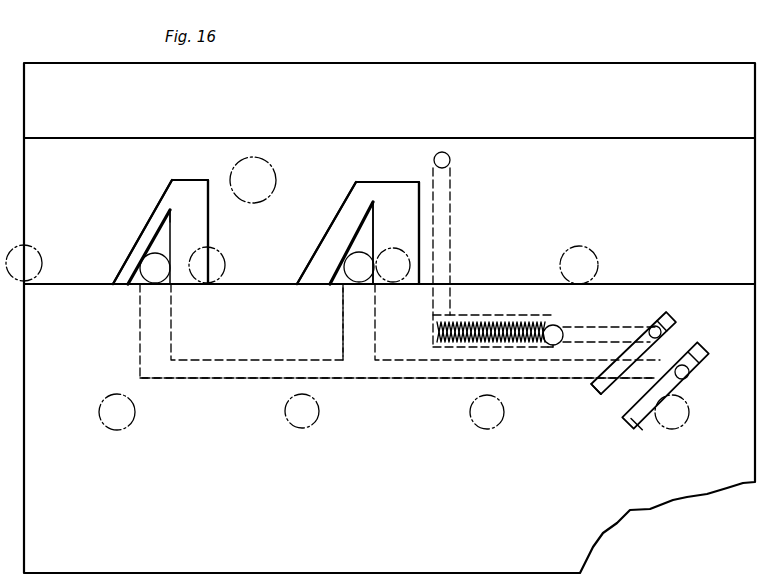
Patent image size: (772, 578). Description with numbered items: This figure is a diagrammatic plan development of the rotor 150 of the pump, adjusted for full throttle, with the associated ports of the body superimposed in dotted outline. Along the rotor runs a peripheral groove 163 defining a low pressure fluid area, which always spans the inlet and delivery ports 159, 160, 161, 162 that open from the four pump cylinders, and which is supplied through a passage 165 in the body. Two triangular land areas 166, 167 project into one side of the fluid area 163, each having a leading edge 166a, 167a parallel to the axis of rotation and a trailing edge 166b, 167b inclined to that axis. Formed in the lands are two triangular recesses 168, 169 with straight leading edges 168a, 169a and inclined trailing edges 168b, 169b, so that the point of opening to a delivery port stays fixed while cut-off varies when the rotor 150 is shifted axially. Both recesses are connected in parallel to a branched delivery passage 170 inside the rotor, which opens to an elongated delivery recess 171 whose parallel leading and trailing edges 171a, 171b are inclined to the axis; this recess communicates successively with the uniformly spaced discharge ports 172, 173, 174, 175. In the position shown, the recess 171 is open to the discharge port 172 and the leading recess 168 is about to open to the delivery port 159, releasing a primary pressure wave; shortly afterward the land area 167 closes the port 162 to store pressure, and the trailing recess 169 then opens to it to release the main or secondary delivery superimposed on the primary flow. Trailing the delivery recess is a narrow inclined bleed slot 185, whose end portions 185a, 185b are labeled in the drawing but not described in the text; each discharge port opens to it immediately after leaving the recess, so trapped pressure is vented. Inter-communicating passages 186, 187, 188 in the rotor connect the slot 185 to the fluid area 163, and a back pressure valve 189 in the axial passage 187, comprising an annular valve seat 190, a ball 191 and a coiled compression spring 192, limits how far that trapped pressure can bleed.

The rotor 150 is at (663, 77).
The peripheral groove 163 is at (675, 148).
The inlet and delivery port 159 is at (393, 284).
The inlet and delivery port 160 is at (593, 253).
The inlet and delivery port 161 is at (38, 252).
The inlet and delivery port 162 is at (222, 260).
The passage 165 is at (275, 172).
The land area 166 is at (392, 217).
The leading edge 166a is at (419, 206).
The trailing edge 166b is at (347, 198).
The land area 167 is at (180, 217).
The leading edge 167a is at (208, 213).
The trailing edge 167b is at (160, 229).
The recess 168 is at (473, 281).
The leading edge 168a is at (395, 243).
The trailing edge 168b is at (351, 243).
The recess 169 is at (372, 276).
The leading edge 169a is at (170, 216).
The trailing edge 169b is at (149, 247).
The branched delivery passage 170 is at (408, 380).
The delivery recess 171 is at (642, 402).
The leading edge 171a is at (636, 428).
The trailing edge 171b is at (624, 416).
The discharge port 172 is at (687, 428).
The discharge port 173 is at (105, 399).
The discharge port 174 is at (293, 425).
The discharge port 175 is at (475, 424).
The bleed slot 185 is at (632, 348).
The end of link 185a is at (680, 326).
The end of link 185b is at (594, 386).
The passage 186 is at (605, 327).
The passage 187 is at (470, 315).
The passage 188 is at (451, 244).
The back pressure valve 189 is at (546, 355).
The annular valve seat 190 is at (558, 325).
The ball 191 is at (556, 341).
The coiled compression spring 192 is at (508, 323).